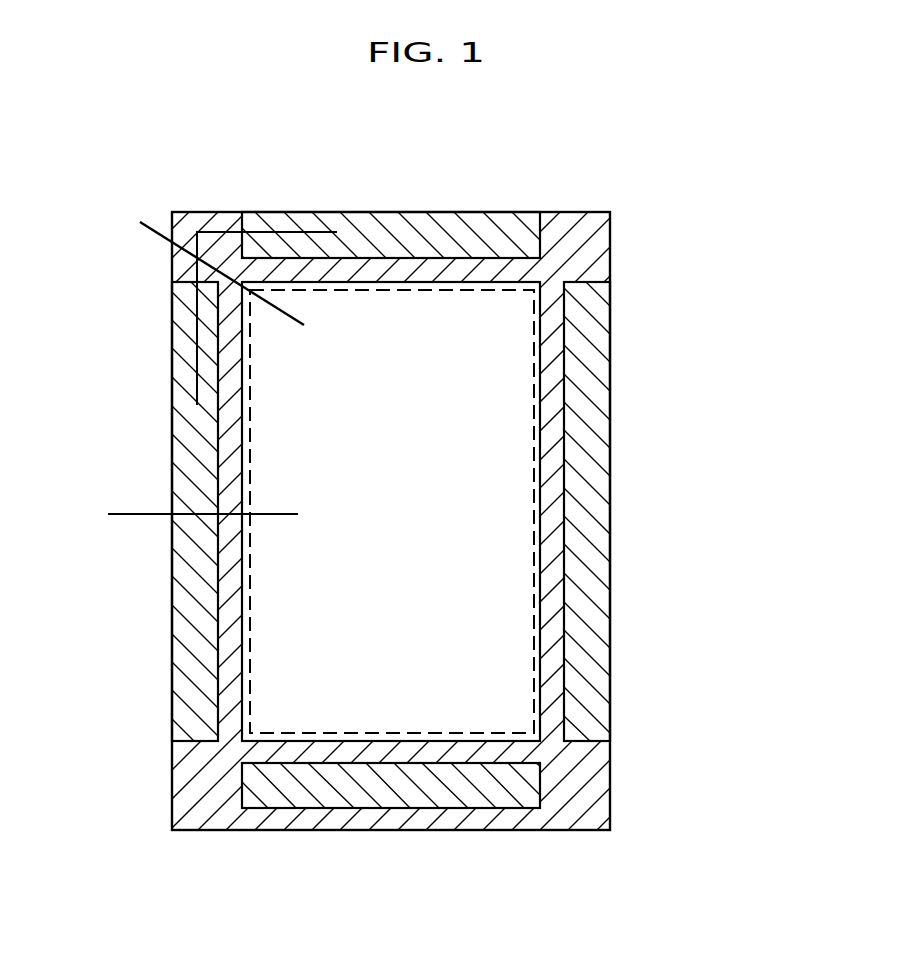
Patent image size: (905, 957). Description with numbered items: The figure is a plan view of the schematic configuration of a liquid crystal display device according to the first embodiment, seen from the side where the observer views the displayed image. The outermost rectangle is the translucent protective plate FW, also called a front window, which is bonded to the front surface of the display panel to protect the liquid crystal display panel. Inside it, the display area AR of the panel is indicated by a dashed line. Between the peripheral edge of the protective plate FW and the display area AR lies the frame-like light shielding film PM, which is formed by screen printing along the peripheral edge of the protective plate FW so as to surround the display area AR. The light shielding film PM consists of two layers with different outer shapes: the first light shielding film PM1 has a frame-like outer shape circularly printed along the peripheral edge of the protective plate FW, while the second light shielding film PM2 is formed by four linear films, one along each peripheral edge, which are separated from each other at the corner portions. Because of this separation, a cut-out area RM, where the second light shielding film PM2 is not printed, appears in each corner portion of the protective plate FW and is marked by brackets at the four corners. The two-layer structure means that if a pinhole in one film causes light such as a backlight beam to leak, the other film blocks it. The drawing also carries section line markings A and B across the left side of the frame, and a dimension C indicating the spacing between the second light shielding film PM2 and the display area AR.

The protective plate FW is at (610, 247).
The light shielding film PM is at (433, 527).
The first light shielding film PM1 is at (602, 787).
The second light shielding film PM2 is at (420, 225).
The cut-out area RM is at (243, 197).
The display area AR is at (392, 511).
The section line A- A is at (280, 328).
The section line B- B is at (283, 526).
The dimension C is at (209, 389).